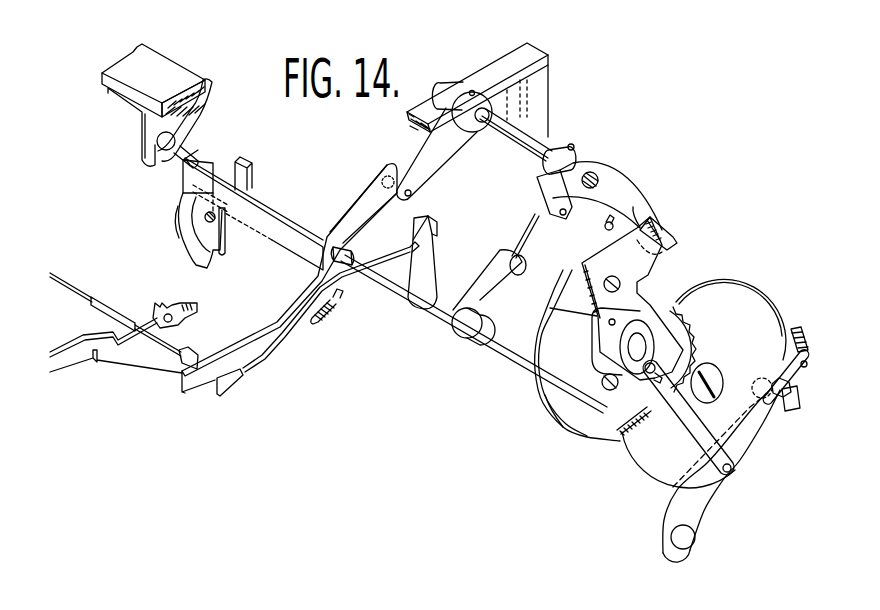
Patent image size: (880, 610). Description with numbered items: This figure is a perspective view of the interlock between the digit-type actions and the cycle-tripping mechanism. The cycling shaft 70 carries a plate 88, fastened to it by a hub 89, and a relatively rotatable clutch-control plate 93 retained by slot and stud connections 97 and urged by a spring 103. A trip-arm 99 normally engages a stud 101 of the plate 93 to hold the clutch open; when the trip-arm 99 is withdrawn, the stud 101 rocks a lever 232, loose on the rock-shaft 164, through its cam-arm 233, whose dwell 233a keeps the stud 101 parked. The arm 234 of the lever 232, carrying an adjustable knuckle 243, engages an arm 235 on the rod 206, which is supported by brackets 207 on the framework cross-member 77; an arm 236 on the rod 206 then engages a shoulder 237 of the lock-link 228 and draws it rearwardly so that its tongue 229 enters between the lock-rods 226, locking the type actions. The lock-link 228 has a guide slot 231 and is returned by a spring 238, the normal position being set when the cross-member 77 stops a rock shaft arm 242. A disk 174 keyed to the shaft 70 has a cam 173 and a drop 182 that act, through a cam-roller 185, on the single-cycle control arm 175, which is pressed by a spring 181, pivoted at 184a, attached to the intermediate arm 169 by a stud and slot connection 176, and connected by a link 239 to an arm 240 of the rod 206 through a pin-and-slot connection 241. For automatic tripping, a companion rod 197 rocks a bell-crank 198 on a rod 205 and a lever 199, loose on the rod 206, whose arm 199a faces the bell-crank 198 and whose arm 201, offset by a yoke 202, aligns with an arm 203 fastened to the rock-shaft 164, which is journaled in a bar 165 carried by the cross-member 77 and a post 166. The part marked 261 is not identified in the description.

The framework cross-member 77 is at (139, 104).
The brackets 207 is at (142, 130).
The rock shaft arm 242 is at (207, 102).
The yoke 202 is at (278, 213).
The companion rod 197 is at (252, 171).
The bell crank rod 205 is at (215, 218).
The lever 199 is at (308, 270).
The arm of lever 199a is at (186, 246).
The bell-crank 198 is at (226, 249).
The lock-rods 226 is at (73, 291).
The strip 261 is at (75, 340).
The tongue 229 is at (220, 352).
The lock-link 228 is at (279, 351).
The arm of lever 201 is at (378, 182).
The guide slot 231 is at (242, 370).
The spring 238 is at (320, 316).
The rock-shaft rod 206 is at (402, 295).
The shoulder 237 is at (433, 221).
The arm 236 is at (430, 257).
The arm 235 is at (490, 261).
The arm 234 is at (521, 228).
The adjustable knuckle 243 is at (543, 192).
The rock-shaft 164 is at (513, 144).
The post 166 is at (550, 84).
The bar 165 is at (488, 58).
The arm 203 is at (433, 185).
The lever 232 is at (608, 155).
The trip-arm 99 is at (672, 231).
The cam-arm 233 is at (653, 227).
The stud 101 is at (633, 207).
The dwell 233a is at (650, 243).
The spring 103 is at (612, 230).
The plate 88 is at (563, 283).
The pawl-controlling plate 93 is at (566, 428).
The slot and stud connections 97 is at (620, 282).
The shaft 70 is at (668, 340).
The hub 89 is at (677, 311).
The pin-and-slot connection 241 is at (672, 368).
The link 239 is at (697, 453).
The arm 240 is at (637, 410).
The cam-disk 174 is at (733, 281).
The single-cycle control arm 175 is at (720, 498).
The pivot 184a is at (694, 531).
The cam-roller 185 is at (760, 378).
The drop 182 is at (757, 403).
The cam 173 is at (781, 358).
The spring 181 is at (820, 313).
The intermediate arm 169 is at (791, 382).
The stud and slot connection 176 is at (786, 410).